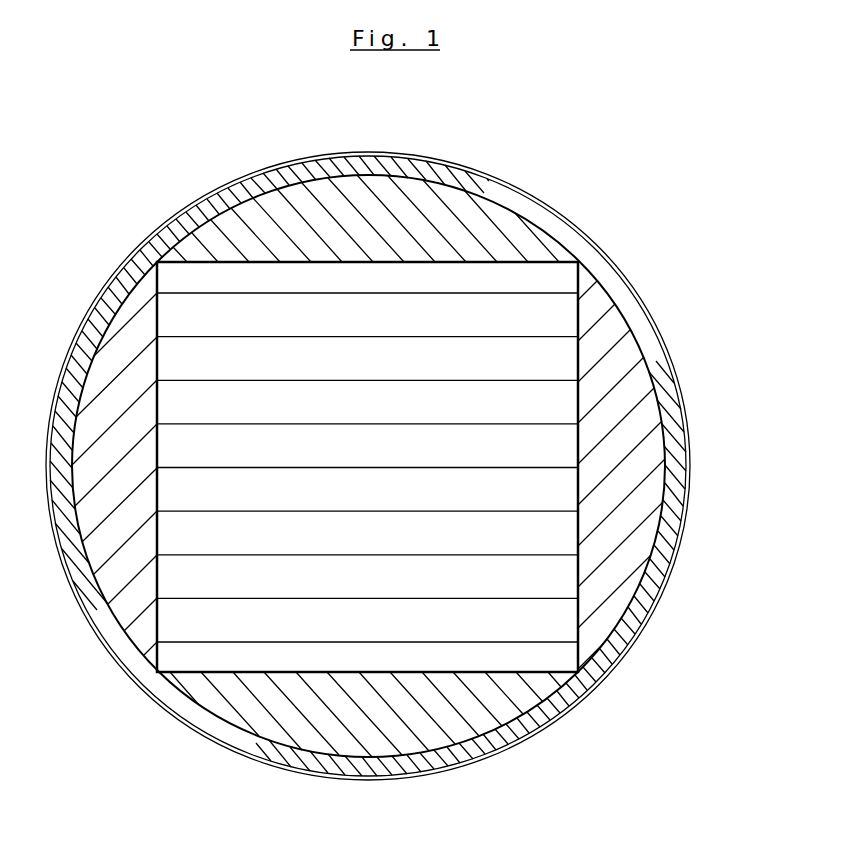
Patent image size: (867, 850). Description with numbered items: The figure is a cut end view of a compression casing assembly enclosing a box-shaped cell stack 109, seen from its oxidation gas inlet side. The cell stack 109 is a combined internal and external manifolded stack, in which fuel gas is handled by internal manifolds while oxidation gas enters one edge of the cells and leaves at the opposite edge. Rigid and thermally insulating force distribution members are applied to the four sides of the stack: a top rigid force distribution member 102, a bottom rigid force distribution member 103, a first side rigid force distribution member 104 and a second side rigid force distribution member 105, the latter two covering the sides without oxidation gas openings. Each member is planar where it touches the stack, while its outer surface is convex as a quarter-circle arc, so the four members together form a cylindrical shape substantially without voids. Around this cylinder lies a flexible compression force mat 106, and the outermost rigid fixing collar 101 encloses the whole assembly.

The rigid fixing collar 101 is at (505, 181).
The flexible compression force mat 106 is at (614, 281).
The top rigid force distribution member 102 is at (373, 217).
The bottom rigid force distribution member 103 is at (375, 708).
The first side rigid force distribution member 104 is at (115, 450).
The second side rigid force distribution member 105 is at (625, 473).
The cell stack 109 is at (372, 449).